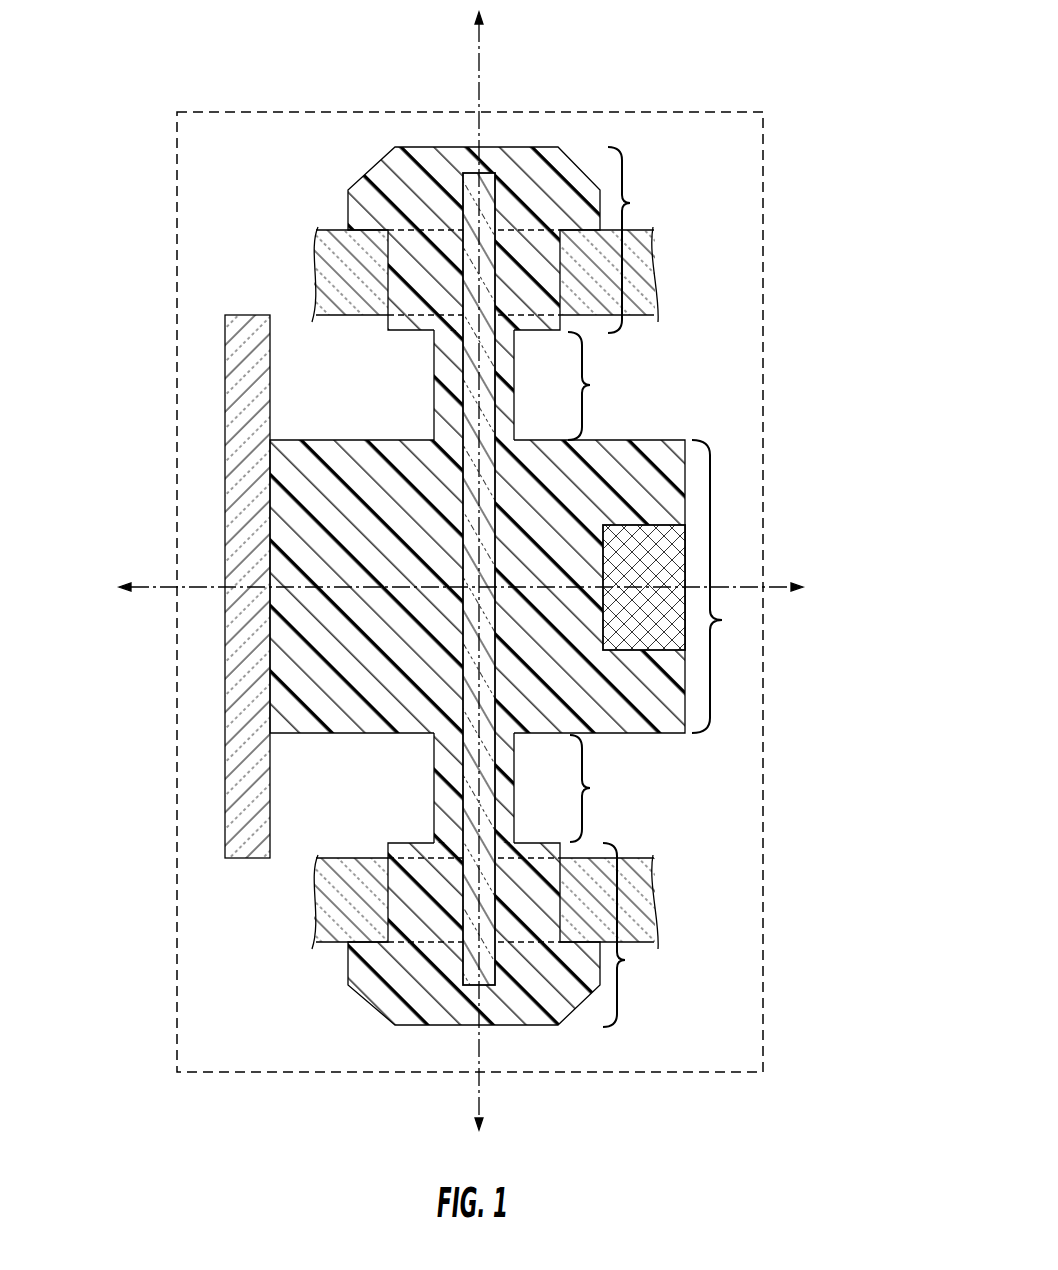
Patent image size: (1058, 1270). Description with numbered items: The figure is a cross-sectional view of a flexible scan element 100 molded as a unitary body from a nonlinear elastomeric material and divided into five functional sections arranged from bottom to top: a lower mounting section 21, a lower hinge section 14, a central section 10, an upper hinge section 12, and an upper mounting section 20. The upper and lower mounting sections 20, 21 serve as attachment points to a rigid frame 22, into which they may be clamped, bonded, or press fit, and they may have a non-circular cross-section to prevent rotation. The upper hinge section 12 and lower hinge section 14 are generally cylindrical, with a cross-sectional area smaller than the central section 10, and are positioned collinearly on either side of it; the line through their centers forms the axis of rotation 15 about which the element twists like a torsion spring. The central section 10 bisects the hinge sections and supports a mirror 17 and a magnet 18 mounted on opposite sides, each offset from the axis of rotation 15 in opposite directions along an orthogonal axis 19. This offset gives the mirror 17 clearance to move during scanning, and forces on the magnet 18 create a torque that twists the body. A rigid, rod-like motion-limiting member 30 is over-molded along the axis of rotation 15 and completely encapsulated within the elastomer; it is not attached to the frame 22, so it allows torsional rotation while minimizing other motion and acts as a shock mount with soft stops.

The flexible scan element 100 is at (176, 110).
The central section 10 is at (722, 620).
The upper hinge section 12 is at (590, 385).
The lower hinge section 14 is at (590, 788).
The axis of rotation 15 is at (482, 73).
The mirror 17 is at (247, 786).
The magnet 18 is at (657, 562).
The orthogonal axis 19 is at (155, 586).
The upper mounting section 20 is at (626, 203).
The lower mounting section 21 is at (626, 960).
The frame 22 is at (343, 256).
The motion-limiting member 30 is at (460, 485).